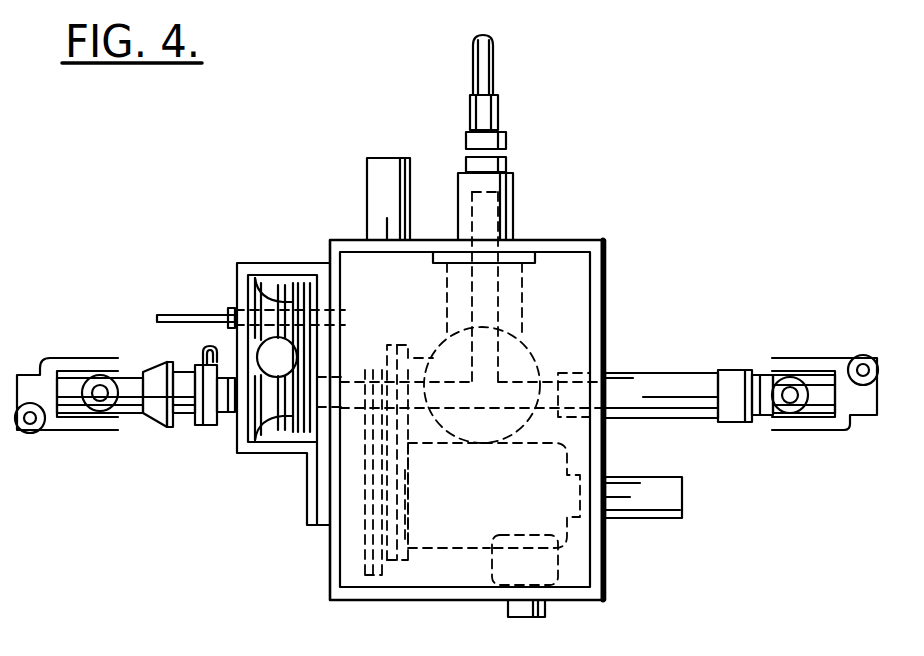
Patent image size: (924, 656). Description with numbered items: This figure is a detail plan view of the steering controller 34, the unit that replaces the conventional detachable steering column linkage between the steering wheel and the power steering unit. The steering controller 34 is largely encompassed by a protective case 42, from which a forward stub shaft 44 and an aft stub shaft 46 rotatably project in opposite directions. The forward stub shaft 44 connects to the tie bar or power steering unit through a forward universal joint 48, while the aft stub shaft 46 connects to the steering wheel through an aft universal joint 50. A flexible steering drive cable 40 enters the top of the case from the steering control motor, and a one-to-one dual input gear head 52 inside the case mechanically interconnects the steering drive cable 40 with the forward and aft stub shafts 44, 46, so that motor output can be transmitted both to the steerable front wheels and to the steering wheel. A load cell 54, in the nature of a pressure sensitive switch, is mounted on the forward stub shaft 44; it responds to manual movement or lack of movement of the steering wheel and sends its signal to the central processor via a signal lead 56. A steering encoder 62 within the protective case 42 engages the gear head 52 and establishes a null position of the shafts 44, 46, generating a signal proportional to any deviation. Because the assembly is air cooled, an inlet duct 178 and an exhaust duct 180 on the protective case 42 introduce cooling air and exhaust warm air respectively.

The steering controller 34 is at (244, 524).
The flexible steering drive cable 40 is at (487, 75).
The protective case 42 is at (565, 602).
The forward stub shaft 44 is at (180, 425).
The aft stub shaft 46 is at (672, 387).
The forward universal joint 48 is at (90, 427).
The aft universal joint 50 is at (813, 422).
The 1:1 dual input gear head 52 is at (450, 357).
The load cell 54 is at (210, 425).
The signal lead 56 is at (183, 312).
The steering encoder 62 is at (470, 507).
The inlet duct 178 is at (367, 181).
The exhaust duct 180 is at (660, 505).